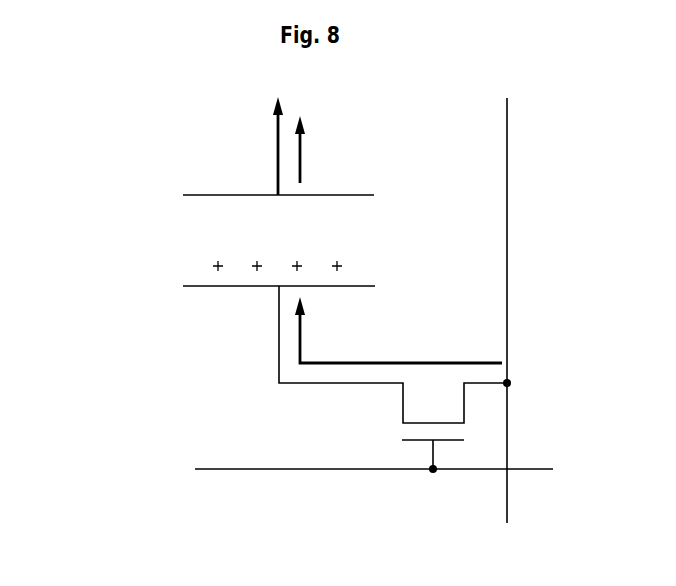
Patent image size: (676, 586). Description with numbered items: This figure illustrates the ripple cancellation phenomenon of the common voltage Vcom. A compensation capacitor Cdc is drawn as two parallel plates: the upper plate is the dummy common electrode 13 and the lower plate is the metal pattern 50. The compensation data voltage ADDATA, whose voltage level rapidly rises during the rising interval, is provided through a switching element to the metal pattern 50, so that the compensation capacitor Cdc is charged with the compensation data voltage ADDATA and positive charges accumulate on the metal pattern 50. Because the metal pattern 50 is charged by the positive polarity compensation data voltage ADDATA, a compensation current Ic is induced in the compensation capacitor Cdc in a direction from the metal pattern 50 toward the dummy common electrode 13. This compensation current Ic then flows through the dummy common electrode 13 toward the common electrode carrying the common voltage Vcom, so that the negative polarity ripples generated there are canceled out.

The dummy common electrode 13 is at (205, 195).
The metal pattern 50 is at (205, 293).
The compensation capacitor Cdc is at (221, 243).
The common voltage Vcom is at (277, 134).
The compensation current Ic is at (308, 149).
The compensation data voltage ADDATA is at (398, 330).